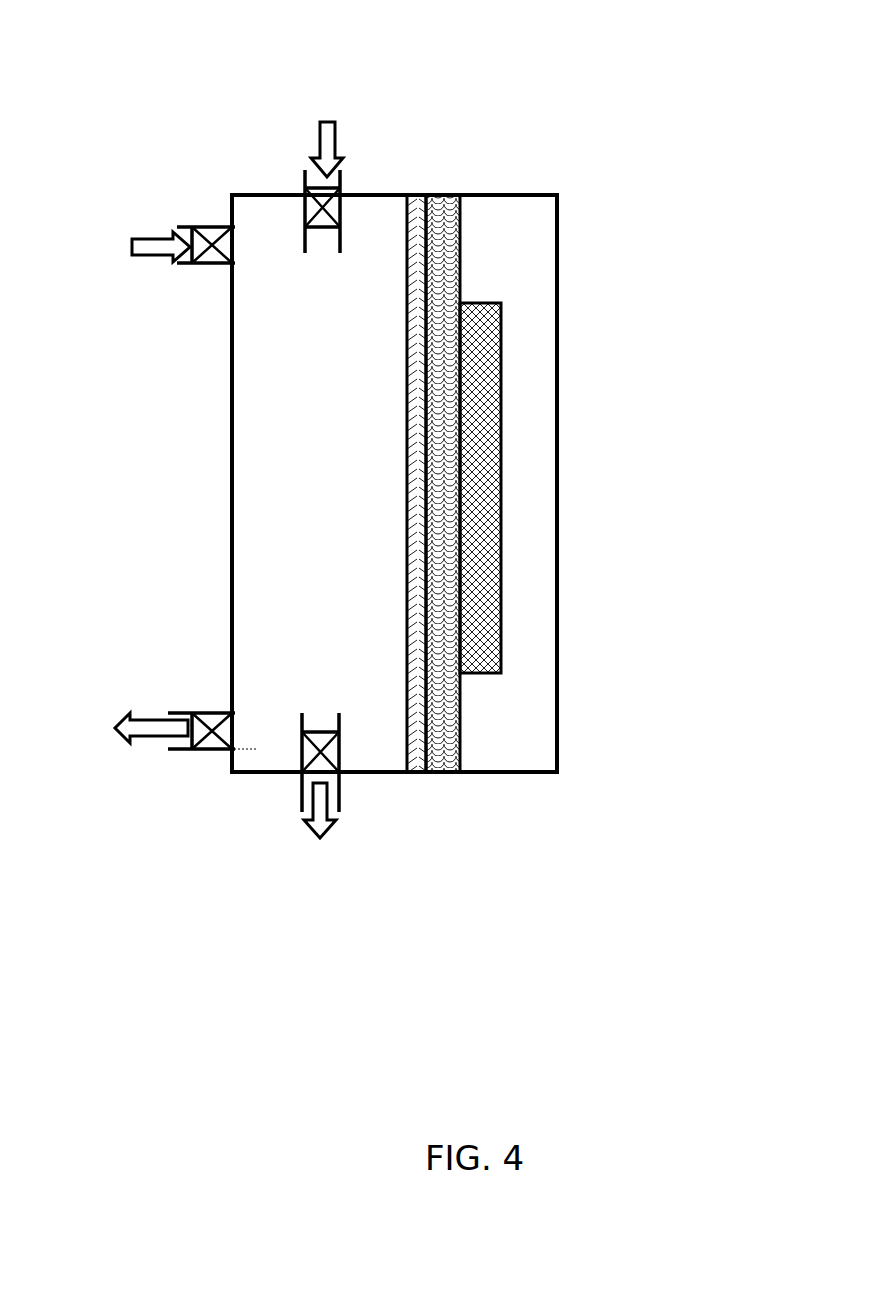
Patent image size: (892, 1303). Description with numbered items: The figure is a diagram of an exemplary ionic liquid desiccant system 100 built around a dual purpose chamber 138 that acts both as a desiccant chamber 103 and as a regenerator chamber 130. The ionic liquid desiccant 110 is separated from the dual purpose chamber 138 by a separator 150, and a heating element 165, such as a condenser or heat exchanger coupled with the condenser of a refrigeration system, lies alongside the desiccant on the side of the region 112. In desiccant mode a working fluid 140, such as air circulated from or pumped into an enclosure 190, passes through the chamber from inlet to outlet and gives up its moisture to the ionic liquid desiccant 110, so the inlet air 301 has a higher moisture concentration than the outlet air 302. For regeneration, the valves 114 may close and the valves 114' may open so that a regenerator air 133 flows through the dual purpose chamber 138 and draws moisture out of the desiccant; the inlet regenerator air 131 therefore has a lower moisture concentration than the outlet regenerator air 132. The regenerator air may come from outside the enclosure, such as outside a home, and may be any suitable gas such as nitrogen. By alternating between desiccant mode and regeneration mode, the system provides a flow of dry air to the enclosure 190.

The ionic liquid desiccant system 100 is at (520, 146).
The working fluid 140 is at (280, 227).
The separator 150 is at (417, 195).
The ionic liquid desiccant 110 is at (458, 195).
The heating element 165 is at (488, 455).
The second compartment 112 is at (517, 745).
The valves 114 is at (206, 296).
The valves 114' is at (334, 255).
The inlet air 301 is at (158, 247).
The inlet regenerator air 131 is at (325, 127).
The regenerator air 133 is at (333, 130).
The outlet air 302 is at (138, 738).
The enclosure 190 is at (105, 743).
The outlet regenerator air 132 is at (315, 838).
The desiccant chamber 103 is at (332, 463).
The regenerator chamber 130 is at (332, 500).
The dual purpose chamber 138 is at (337, 595).